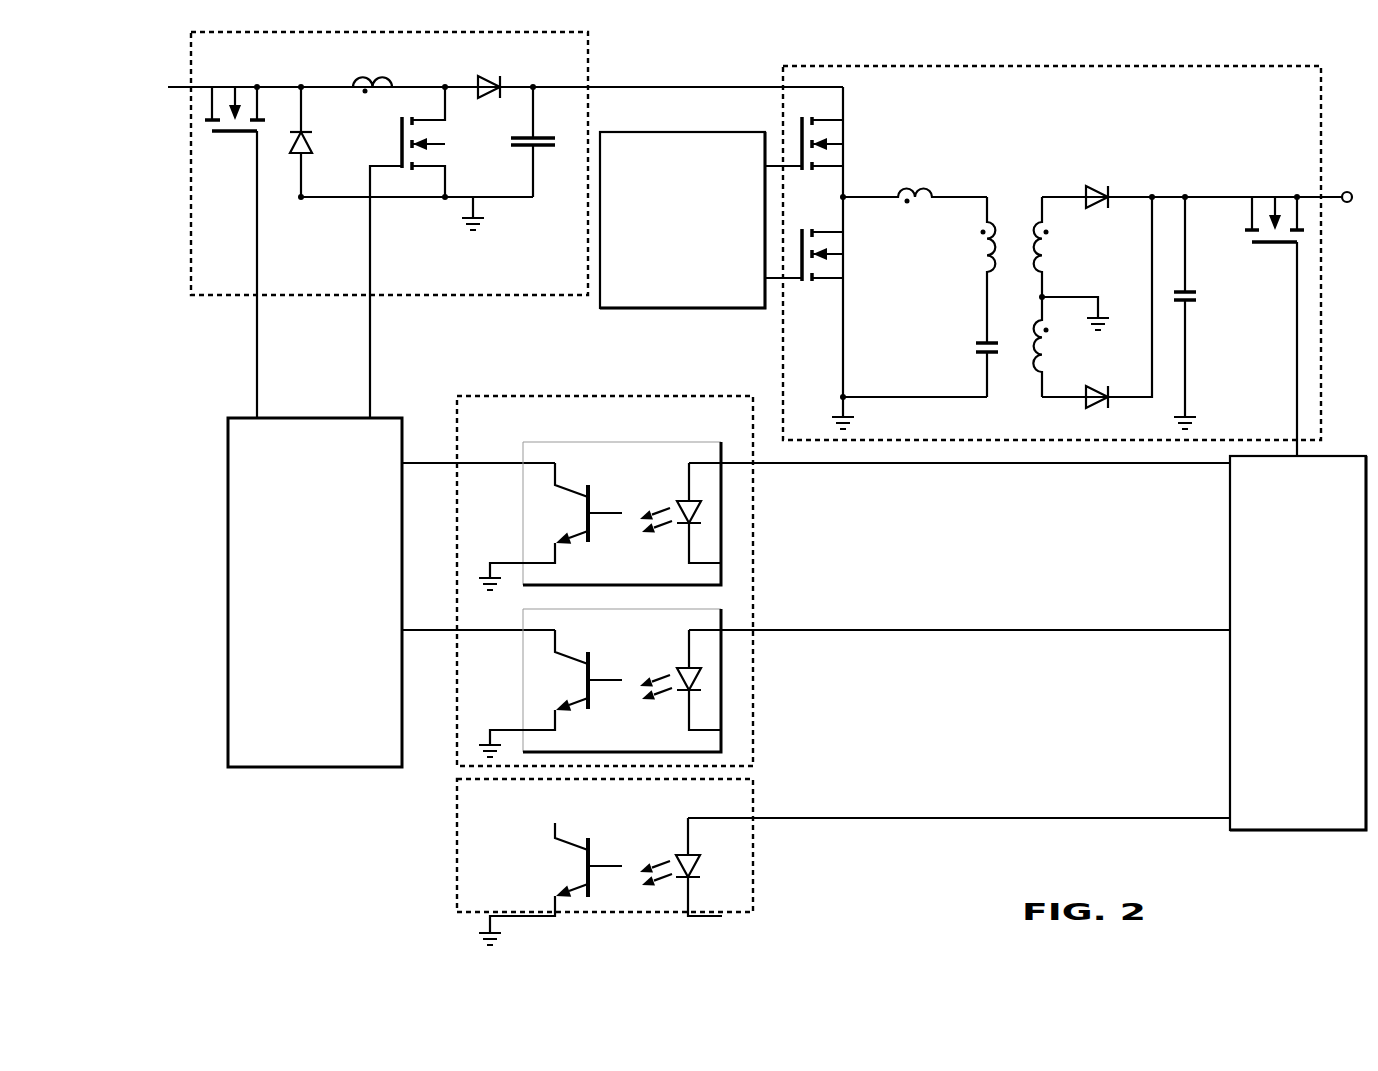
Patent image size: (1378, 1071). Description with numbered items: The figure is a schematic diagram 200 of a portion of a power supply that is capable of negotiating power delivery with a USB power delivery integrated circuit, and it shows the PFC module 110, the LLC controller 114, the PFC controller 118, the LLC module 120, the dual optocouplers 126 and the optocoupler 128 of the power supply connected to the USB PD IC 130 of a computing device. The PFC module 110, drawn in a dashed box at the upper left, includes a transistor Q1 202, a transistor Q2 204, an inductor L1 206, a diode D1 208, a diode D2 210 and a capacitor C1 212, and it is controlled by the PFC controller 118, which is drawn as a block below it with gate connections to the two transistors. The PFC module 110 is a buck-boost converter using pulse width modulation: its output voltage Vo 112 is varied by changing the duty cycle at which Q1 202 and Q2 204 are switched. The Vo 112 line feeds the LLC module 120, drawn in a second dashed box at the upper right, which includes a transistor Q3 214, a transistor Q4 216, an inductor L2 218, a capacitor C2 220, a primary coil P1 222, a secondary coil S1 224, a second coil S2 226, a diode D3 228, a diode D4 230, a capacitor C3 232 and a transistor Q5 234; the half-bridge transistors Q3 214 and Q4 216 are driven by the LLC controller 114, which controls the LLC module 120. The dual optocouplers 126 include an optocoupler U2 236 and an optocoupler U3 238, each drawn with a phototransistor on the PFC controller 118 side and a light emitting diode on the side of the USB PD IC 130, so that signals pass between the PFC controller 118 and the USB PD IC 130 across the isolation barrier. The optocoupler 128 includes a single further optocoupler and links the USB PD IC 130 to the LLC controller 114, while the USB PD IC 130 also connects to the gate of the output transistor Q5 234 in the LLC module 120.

The schematic diagram 200 is at (117, 66).
The PFC module 110 is at (389, 163).
The Vo output voltage 112 is at (688, 69).
The LLC controller 114 is at (352, 845).
The PFC controller 118 is at (315, 592).
The LLC module 120 is at (1052, 253).
The dual optocouplers 126 is at (605, 581).
The optocoupler 128 is at (605, 862).
The USB PD IC 130 is at (1298, 643).
The transistor Q1 202 is at (430, 252).
The transistor Q2 204 is at (235, 237).
The inductor L1 206 is at (373, 68).
The diode D1 208 is at (322, 142).
The diode D2 210 is at (493, 73).
The capacitor C1 212 is at (547, 142).
The transistor Q3 214 is at (842, 142).
The transistor Q4 216 is at (842, 253).
The inductor L2 218 is at (915, 177).
The capacitor C2 220 is at (968, 357).
The primary coil P1 222 is at (972, 270).
The secondary coil S1 224 is at (1057, 247).
The secondary coil S2 226 is at (1057, 347).
The diode D3 228 is at (1096, 182).
The diode D4 230 is at (1103, 412).
The capacitor C3 232 is at (1205, 313).
The transistor Q5 234 is at (1274, 310).
The optocoupler U2 236 is at (600, 516).
The optocoupler U3 238 is at (600, 683).